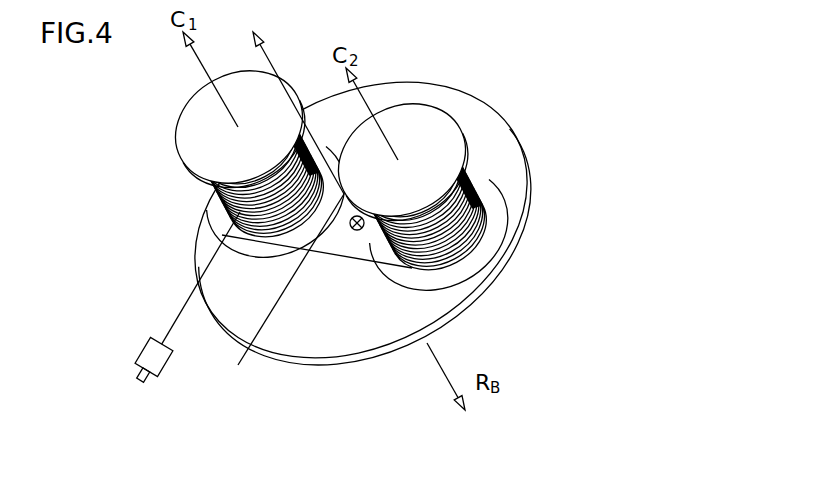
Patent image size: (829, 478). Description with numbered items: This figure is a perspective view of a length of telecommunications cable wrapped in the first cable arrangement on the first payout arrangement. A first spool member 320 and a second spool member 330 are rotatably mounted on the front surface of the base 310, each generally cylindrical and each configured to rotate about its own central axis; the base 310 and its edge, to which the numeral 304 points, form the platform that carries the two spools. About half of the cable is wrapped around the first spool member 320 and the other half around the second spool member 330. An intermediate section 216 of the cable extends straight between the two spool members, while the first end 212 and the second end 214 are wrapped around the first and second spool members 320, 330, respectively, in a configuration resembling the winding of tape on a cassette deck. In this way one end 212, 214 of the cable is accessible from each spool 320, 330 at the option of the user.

The base 310 is at (485, 138).
The base 304 is at (517, 284).
The first spool member 320 is at (234, 97).
The second spool member 330 is at (437, 125).
The first end 212 is at (183, 308).
The second end 214 is at (273, 310).
The intermediate section 216 is at (337, 252).